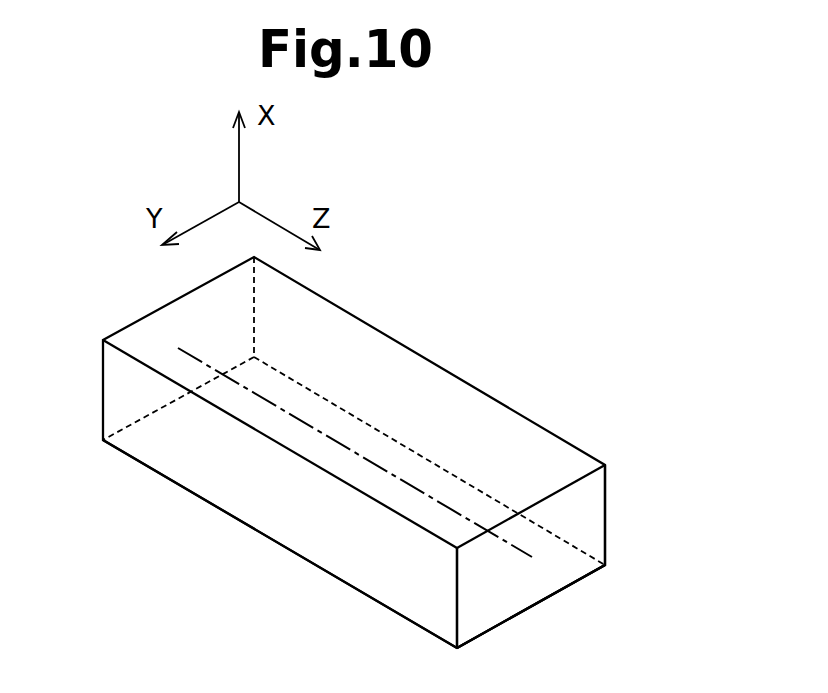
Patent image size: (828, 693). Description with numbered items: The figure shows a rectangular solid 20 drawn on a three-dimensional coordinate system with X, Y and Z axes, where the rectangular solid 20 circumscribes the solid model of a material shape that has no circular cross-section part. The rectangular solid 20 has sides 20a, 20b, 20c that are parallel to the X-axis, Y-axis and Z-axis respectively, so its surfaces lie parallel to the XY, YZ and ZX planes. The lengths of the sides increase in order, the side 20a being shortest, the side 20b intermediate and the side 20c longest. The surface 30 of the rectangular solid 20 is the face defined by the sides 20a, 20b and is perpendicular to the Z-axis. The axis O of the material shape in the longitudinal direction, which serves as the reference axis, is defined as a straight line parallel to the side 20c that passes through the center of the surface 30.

The rectangular solid 20 is at (486, 352).
The side 20a is at (455, 593).
The side 20b is at (538, 603).
The side 20c is at (247, 527).
The surface 30 is at (595, 515).
The axis O is at (378, 458).